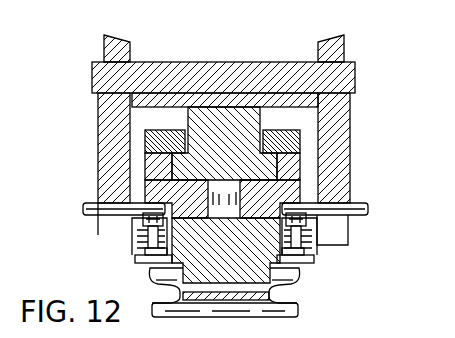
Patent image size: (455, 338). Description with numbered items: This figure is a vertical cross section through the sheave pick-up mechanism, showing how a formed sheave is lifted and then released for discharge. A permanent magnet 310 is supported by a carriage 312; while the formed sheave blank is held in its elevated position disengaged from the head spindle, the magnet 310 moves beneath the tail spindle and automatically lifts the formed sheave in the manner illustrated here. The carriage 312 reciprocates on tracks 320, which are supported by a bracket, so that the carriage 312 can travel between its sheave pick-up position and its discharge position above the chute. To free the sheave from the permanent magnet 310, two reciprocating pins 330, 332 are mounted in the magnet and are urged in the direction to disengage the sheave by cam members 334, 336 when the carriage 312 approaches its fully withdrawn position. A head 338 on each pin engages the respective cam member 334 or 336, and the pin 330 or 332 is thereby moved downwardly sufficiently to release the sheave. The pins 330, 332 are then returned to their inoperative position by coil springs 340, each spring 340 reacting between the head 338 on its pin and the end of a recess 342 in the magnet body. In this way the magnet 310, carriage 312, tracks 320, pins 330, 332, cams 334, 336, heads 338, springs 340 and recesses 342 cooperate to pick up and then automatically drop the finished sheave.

The magnet 310 is at (152, 270).
The carriage 312 is at (177, 135).
The tracks 320 is at (223, 113).
The reciprocating pin 330 is at (135, 253).
The reciprocating pin 332 is at (317, 262).
The cam member 334 is at (83, 209).
The cam member 336 is at (370, 211).
The head 338 is at (137, 222).
The coil springs 340 is at (143, 233).
The recess 342 is at (315, 250).